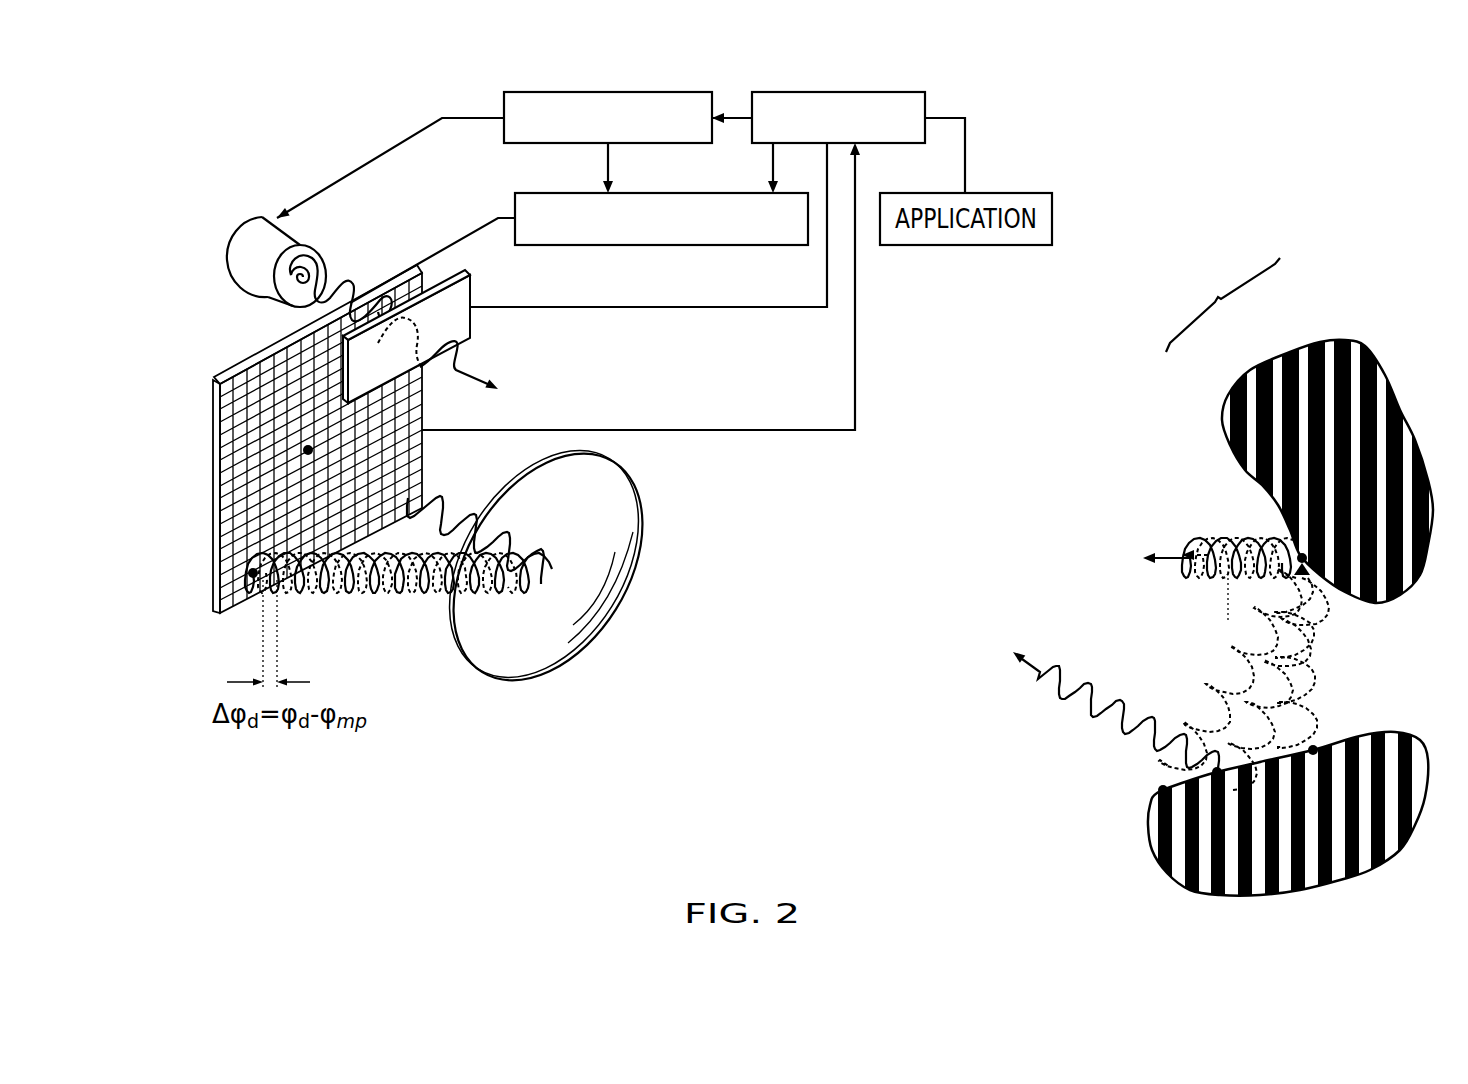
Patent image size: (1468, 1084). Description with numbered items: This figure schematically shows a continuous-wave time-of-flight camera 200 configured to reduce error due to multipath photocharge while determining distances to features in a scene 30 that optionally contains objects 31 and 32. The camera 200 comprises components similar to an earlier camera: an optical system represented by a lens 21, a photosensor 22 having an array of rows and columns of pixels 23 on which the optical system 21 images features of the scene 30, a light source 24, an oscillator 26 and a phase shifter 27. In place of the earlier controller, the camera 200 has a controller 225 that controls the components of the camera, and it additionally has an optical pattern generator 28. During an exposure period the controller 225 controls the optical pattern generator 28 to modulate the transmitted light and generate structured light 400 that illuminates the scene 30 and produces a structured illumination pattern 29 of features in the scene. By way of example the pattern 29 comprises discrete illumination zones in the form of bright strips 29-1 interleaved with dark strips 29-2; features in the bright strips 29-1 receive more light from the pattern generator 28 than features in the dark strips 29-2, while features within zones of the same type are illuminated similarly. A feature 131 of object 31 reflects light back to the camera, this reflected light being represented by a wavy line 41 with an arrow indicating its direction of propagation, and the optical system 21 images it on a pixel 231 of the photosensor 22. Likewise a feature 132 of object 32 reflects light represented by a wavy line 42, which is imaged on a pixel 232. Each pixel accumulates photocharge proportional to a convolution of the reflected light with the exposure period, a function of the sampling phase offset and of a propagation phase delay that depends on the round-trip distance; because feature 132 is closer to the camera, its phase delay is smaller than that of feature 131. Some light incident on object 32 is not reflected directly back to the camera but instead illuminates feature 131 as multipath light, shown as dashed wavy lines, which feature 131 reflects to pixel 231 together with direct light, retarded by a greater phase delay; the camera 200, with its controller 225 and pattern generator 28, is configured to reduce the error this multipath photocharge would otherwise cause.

The CW-TOF camera 200 is at (146, 178).
The lens 21 is at (548, 672).
The photosensor 22 is at (252, 444).
The pixels 23 is at (220, 393).
The pixel 231 is at (253, 574).
The pixel 232 is at (308, 450).
The light source 24 is at (258, 215).
The oscillator 26 is at (606, 92).
The phase shifter 27 is at (515, 200).
The optical pattern generator 28 is at (470, 283).
The controller 225 is at (810, 92).
The structured light 400 is at (470, 362).
The reflected light 41 is at (377, 597).
The reflected light 42 is at (450, 500).
The structured illumination pattern 29 is at (1212, 285).
The bright strips 29-1 is at (1248, 390).
The dark strips 29-2 is at (1288, 362).
The scene 30 is at (1290, 584).
The object 31 is at (1359, 475).
The object 32 is at (1309, 842).
The feature 131 is at (1306, 559).
The feature 132 is at (1217, 775).